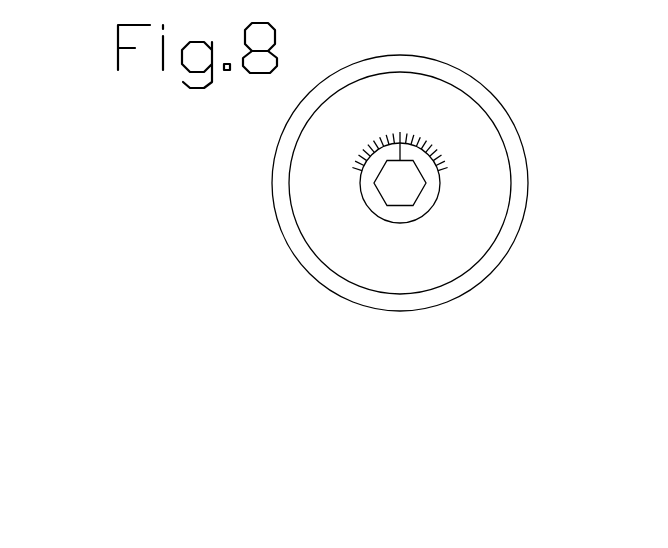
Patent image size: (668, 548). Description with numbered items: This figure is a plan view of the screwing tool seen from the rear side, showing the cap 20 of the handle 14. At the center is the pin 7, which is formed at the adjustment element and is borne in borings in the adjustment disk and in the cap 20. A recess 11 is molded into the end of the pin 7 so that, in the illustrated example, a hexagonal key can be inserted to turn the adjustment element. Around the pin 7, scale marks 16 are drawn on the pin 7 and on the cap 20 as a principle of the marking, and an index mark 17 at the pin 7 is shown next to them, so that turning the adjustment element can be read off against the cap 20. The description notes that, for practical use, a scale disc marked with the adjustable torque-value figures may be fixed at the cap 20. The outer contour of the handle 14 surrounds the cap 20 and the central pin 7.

The handle 14 is at (497, 247).
The cap 20 is at (312, 152).
The pin 7 is at (428, 193).
The recess 11 is at (398, 182).
The scale marks 16 is at (402, 150).
The pointer mark 17 is at (418, 135).